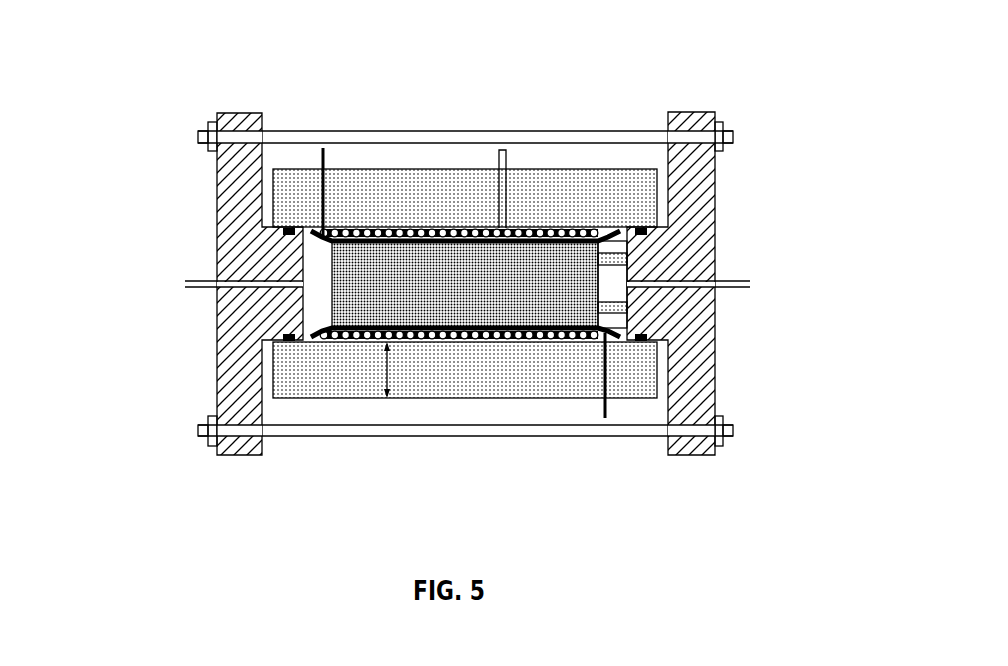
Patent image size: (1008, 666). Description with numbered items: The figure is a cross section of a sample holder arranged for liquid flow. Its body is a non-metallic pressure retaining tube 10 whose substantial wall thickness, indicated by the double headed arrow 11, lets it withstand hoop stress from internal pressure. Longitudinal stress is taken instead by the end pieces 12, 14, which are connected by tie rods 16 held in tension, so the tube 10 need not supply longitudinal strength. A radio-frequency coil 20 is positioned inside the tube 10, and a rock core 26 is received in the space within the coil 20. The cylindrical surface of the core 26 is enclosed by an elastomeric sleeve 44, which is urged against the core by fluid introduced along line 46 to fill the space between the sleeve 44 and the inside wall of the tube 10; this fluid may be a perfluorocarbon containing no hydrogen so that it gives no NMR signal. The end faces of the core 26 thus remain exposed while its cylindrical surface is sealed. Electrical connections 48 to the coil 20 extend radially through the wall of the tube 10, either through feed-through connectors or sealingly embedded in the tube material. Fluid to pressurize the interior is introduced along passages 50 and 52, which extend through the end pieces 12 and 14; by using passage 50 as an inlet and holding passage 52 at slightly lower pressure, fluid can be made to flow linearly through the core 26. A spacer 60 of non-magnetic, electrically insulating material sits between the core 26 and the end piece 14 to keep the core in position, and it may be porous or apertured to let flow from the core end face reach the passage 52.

The pressure retaining tube 10 is at (589, 180).
The double headed arrow 11 is at (386, 397).
The end piece 12 is at (217, 190).
The end piece 14 is at (699, 178).
The tie rod 16 is at (618, 138).
The radio-frequency coil 20 is at (415, 220).
The rock core 26 is at (437, 312).
The elastomeric sleeve 44 is at (304, 244).
The fluid introduction line 46 is at (501, 150).
The electrical connections 48 is at (628, 463).
The passage 50 is at (197, 290).
The passage 52 is at (725, 278).
The spacer 60 is at (613, 310).